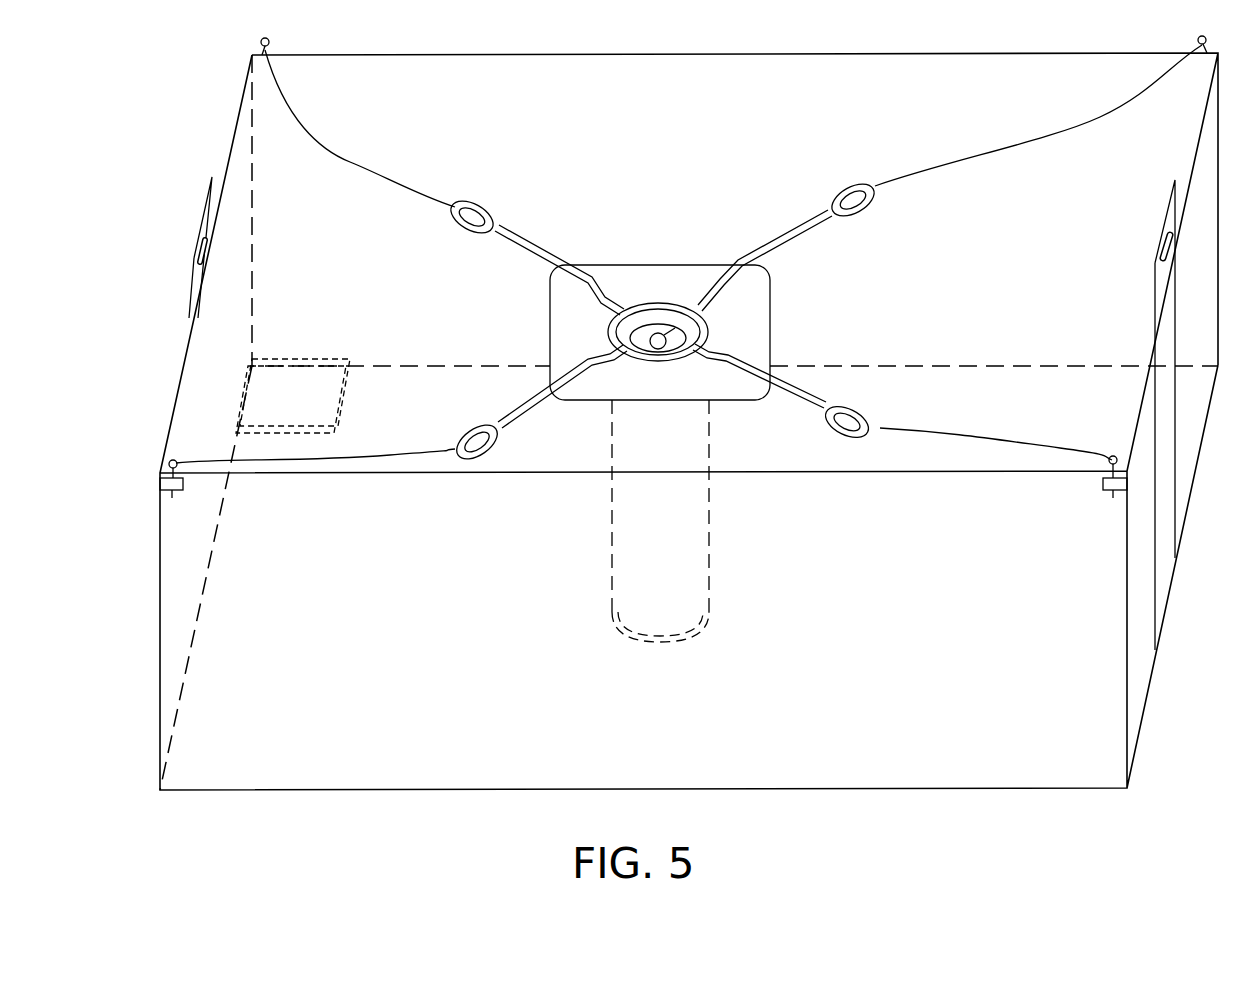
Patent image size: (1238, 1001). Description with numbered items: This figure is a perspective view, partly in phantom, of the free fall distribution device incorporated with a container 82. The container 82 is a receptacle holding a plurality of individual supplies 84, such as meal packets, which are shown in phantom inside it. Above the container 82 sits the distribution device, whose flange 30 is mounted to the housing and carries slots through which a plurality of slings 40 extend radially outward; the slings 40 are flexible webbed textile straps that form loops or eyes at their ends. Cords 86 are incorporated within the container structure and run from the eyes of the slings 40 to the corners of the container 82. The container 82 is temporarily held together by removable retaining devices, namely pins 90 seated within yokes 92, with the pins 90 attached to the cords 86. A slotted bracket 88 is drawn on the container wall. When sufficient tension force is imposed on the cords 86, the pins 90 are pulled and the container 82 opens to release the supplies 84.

The flange 30 is at (768, 320).
The slings 40 is at (818, 222).
The container 82 is at (430, 610).
The individual supplies 84 is at (345, 393).
The cords 86 is at (1050, 140).
The slotted bracket 88 is at (207, 202).
The pins 90 is at (1112, 498).
The yokes 92 is at (1100, 490).